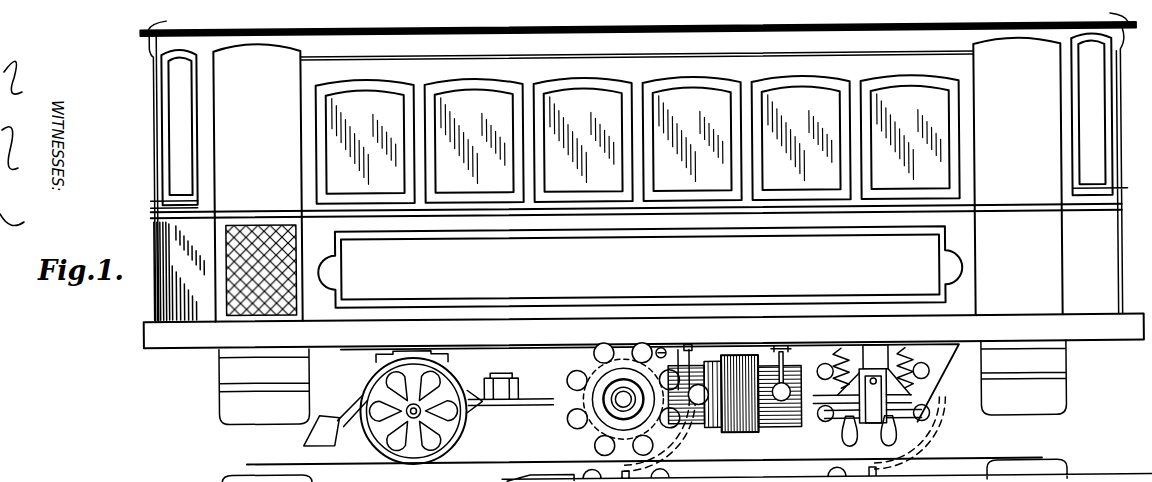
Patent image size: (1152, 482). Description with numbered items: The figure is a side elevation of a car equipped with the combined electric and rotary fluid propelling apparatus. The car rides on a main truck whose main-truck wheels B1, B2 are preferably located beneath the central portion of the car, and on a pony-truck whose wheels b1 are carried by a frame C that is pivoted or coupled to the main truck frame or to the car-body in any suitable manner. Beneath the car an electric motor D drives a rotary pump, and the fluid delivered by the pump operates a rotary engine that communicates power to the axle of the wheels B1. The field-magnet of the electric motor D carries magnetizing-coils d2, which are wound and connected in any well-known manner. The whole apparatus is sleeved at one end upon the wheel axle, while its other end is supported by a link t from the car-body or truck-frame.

The frame C is at (489, 366).
The pony-truck wheels b1 is at (455, 422).
The main-truck wheels B1 is at (672, 432).
The magnetizing-coils d2 is at (740, 427).
The electric motor D is at (780, 404).
The link t is at (785, 365).
The main-truck wheels B2 is at (924, 432).